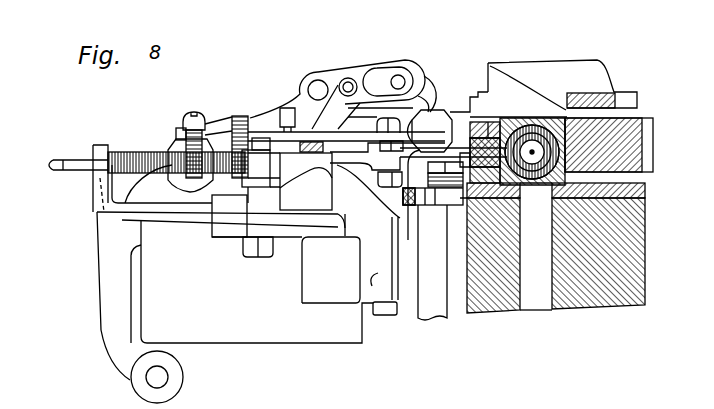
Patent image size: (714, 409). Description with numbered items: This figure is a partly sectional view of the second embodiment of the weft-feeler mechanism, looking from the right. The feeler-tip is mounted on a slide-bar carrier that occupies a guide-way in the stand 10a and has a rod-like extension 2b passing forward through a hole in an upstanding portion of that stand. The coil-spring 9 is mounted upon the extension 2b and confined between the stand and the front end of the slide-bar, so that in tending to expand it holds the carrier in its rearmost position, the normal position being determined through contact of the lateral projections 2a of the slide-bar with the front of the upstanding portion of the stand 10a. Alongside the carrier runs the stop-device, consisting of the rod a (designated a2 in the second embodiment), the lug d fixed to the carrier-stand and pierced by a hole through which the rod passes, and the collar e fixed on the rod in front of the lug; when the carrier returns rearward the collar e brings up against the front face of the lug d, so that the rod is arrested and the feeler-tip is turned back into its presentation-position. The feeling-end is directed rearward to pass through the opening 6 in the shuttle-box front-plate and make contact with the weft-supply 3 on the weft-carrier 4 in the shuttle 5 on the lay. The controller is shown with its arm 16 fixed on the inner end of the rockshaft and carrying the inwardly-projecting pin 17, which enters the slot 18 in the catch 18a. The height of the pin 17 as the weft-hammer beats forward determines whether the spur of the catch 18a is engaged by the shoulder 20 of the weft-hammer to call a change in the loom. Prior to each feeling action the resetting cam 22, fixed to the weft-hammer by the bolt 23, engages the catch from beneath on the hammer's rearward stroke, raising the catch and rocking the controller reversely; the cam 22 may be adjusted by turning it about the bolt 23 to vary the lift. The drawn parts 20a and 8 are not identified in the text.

The rod-like extension 2b is at (73, 170).
The coil-spring 9 is at (121, 150).
The collar e is at (186, 125).
The lug d is at (240, 115).
The rod a2 is at (260, 130).
The arm 16 is at (314, 82).
The pin 17 is at (346, 79).
The slot 18 is at (383, 76).
The catch 18a is at (412, 63).
The shoulder 20 is at (438, 93).
The lever arm 20a is at (448, 110).
The bolt 23 is at (435, 128).
The resetting cam 22 is at (347, 110).
The opening 6 is at (390, 118).
The shuttle 5 is at (493, 124).
The weft-supply 3 is at (533, 124).
The weft-carrier 4 is at (550, 130).
The lateral projection 2a is at (282, 183).
The rod a is at (365, 212).
The bolt 8 is at (468, 180).
The stand 10a is at (182, 205).